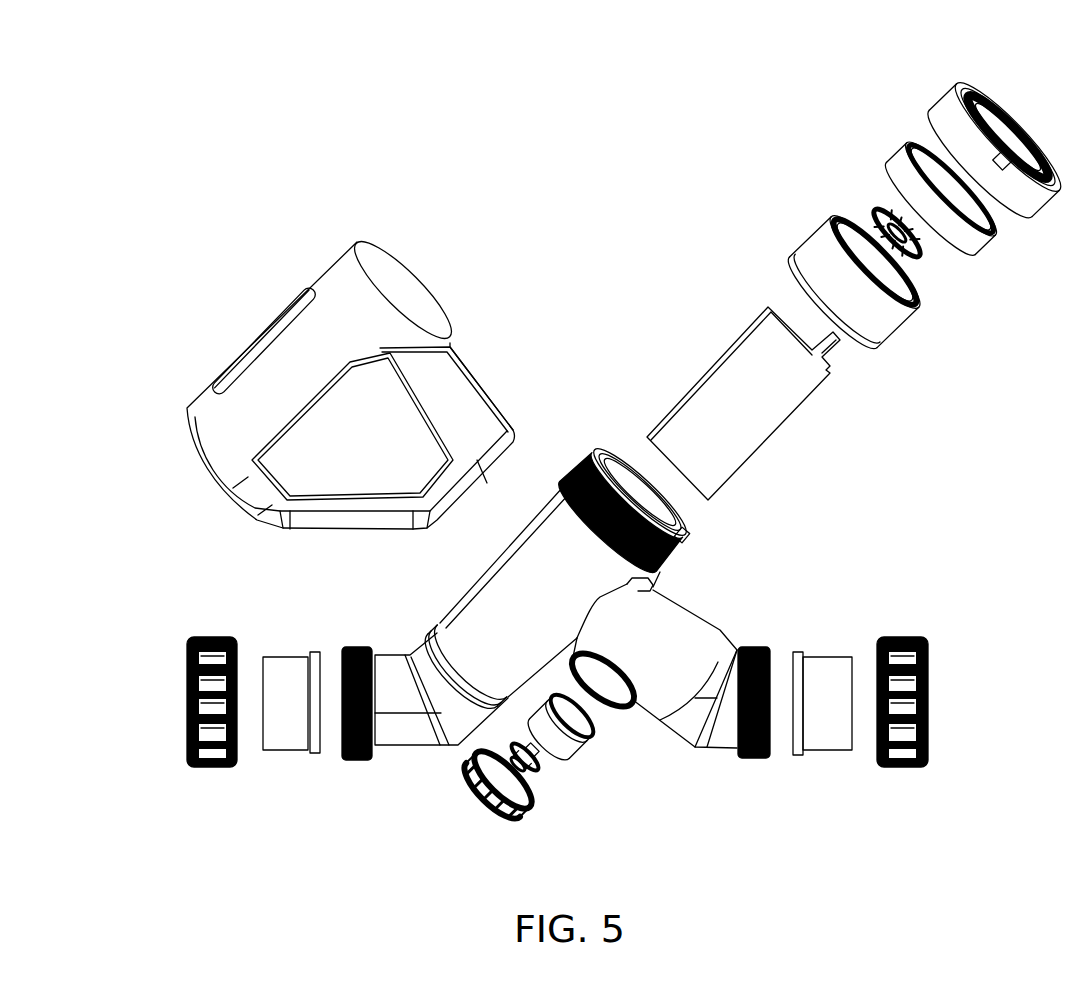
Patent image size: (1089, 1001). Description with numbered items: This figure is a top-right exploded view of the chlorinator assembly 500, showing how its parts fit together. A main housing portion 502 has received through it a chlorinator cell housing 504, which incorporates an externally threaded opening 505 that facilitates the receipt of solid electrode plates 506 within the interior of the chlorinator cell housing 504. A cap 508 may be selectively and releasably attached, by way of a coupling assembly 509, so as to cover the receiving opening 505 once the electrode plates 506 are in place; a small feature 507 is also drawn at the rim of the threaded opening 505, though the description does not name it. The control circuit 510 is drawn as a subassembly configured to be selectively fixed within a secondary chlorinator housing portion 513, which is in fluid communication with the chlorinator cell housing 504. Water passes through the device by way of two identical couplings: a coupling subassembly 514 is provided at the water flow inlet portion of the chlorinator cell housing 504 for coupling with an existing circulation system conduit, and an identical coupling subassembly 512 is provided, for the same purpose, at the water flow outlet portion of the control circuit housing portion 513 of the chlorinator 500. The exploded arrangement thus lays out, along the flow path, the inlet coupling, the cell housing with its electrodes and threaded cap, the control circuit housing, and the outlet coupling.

The chlorinator assembly 500 is at (604, 61).
The main housing portion 502 is at (311, 231).
The chlorinator cell housing 504 is at (548, 557).
The externally threaded opening 505 is at (627, 480).
The solid electrode plates 506 is at (740, 437).
The locking tab 507 is at (684, 553).
The cap 508 is at (947, 112).
The coupling assembly 509 is at (890, 124).
The control circuit 510 is at (660, 722).
The coupling subassembly 512 is at (927, 771).
The secondary chlorinator housing portion 513 is at (667, 643).
The coupling subassembly 514 is at (450, 783).